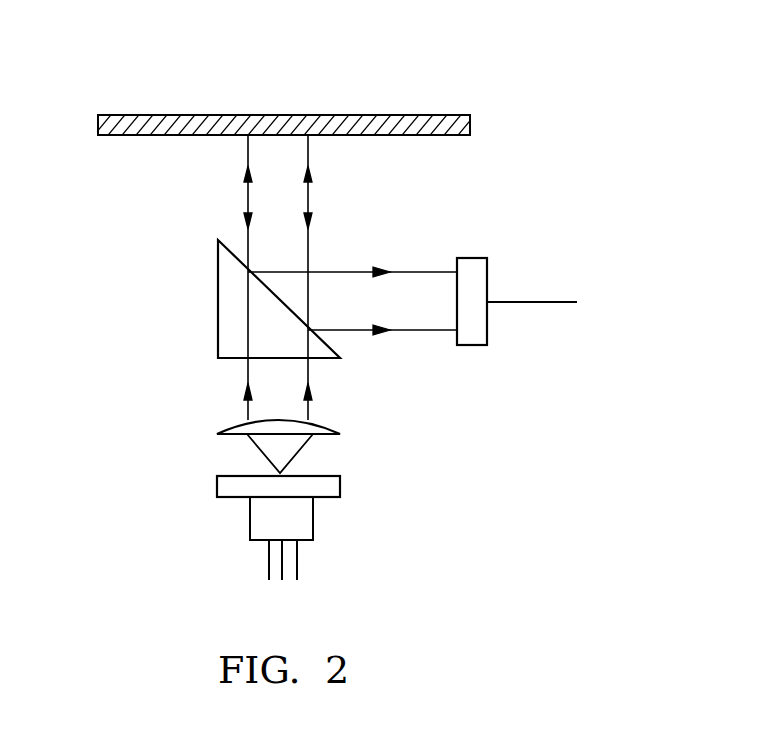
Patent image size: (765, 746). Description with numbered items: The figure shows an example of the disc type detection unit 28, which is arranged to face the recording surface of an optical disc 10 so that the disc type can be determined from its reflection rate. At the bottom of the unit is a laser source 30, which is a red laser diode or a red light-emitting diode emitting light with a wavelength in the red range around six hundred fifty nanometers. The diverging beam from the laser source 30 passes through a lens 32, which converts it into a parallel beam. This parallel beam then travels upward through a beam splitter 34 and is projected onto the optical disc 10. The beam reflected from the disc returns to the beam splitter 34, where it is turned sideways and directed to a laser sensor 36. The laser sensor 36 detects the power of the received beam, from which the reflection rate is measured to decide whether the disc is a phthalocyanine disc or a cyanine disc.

The optical disc 10 is at (445, 114).
The disc type detection unit 28 is at (492, 194).
The laser source 30 is at (217, 487).
The lens 32 is at (222, 424).
The beam splitter 34 is at (218, 320).
The laser sensor 36 is at (490, 282).